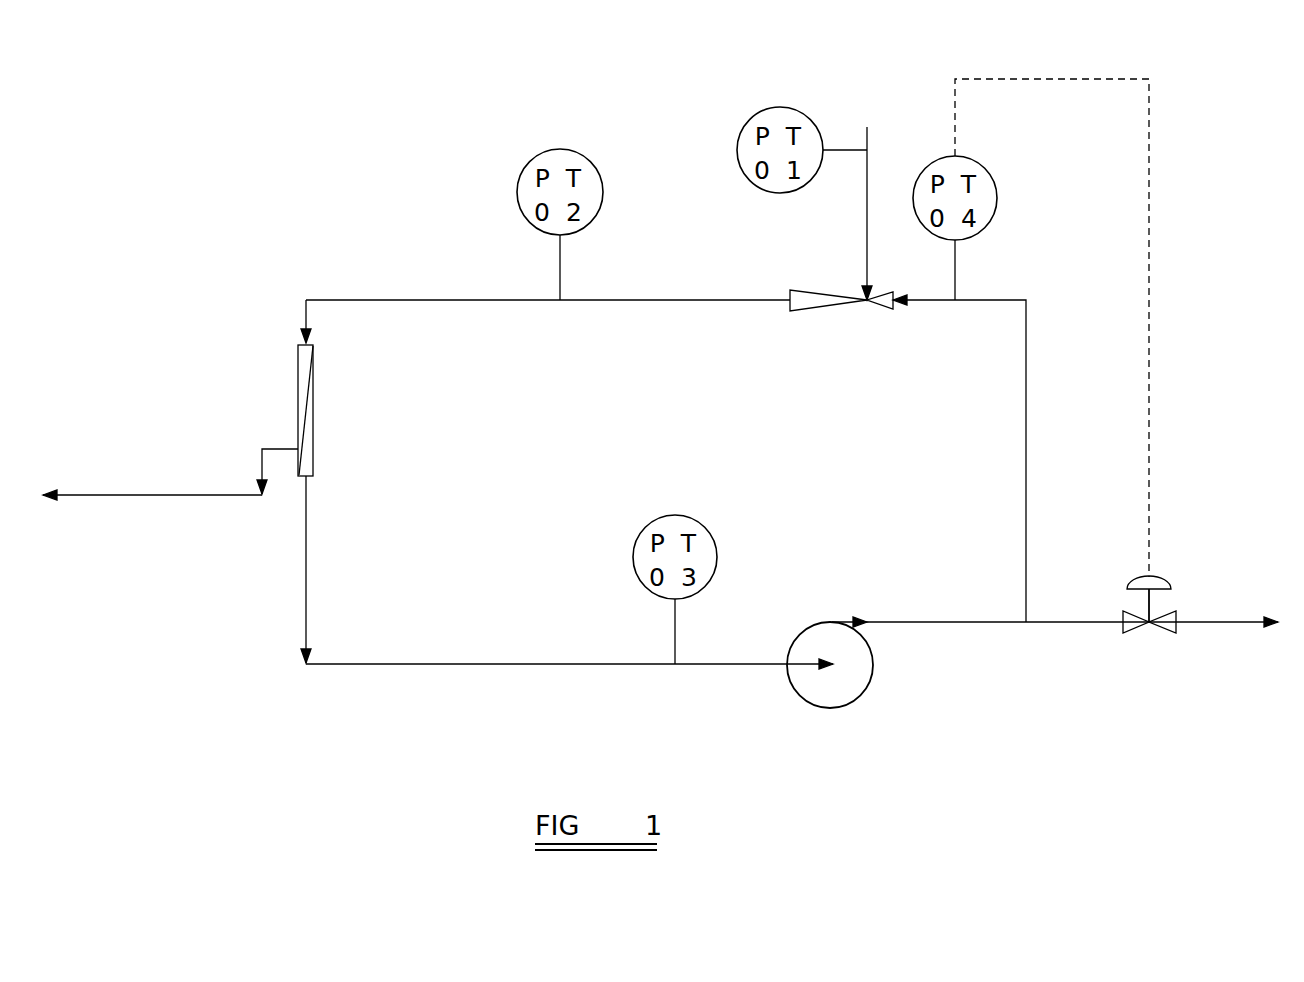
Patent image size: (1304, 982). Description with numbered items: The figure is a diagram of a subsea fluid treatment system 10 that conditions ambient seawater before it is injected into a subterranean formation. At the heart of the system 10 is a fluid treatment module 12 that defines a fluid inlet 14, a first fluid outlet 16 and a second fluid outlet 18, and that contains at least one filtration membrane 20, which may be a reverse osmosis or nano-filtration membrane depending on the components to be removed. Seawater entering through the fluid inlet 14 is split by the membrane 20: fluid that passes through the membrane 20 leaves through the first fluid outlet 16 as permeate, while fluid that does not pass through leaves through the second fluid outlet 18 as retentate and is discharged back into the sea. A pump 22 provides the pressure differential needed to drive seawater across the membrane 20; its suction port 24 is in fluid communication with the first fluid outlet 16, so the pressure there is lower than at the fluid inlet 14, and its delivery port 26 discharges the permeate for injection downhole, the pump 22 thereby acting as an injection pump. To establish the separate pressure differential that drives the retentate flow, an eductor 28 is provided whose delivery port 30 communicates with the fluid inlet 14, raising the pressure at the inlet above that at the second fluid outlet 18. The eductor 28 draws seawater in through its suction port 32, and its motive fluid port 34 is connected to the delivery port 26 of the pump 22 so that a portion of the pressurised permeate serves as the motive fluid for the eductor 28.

The fluid treatment system 10 is at (293, 235).
The fluid treatment module 12 is at (298, 357).
The fluid inlet 14 is at (303, 342).
The first fluid outlet 16 is at (311, 478).
The second fluid outlet 18 is at (280, 448).
The filtration membrane 20 is at (307, 408).
The pump 22 is at (825, 687).
The suction port 24 is at (787, 663).
The delivery port 26 is at (853, 620).
The eductor 28 is at (833, 297).
The delivery port 30 is at (790, 295).
The suction port 32 is at (873, 297).
The motive fluid port 34 is at (893, 308).